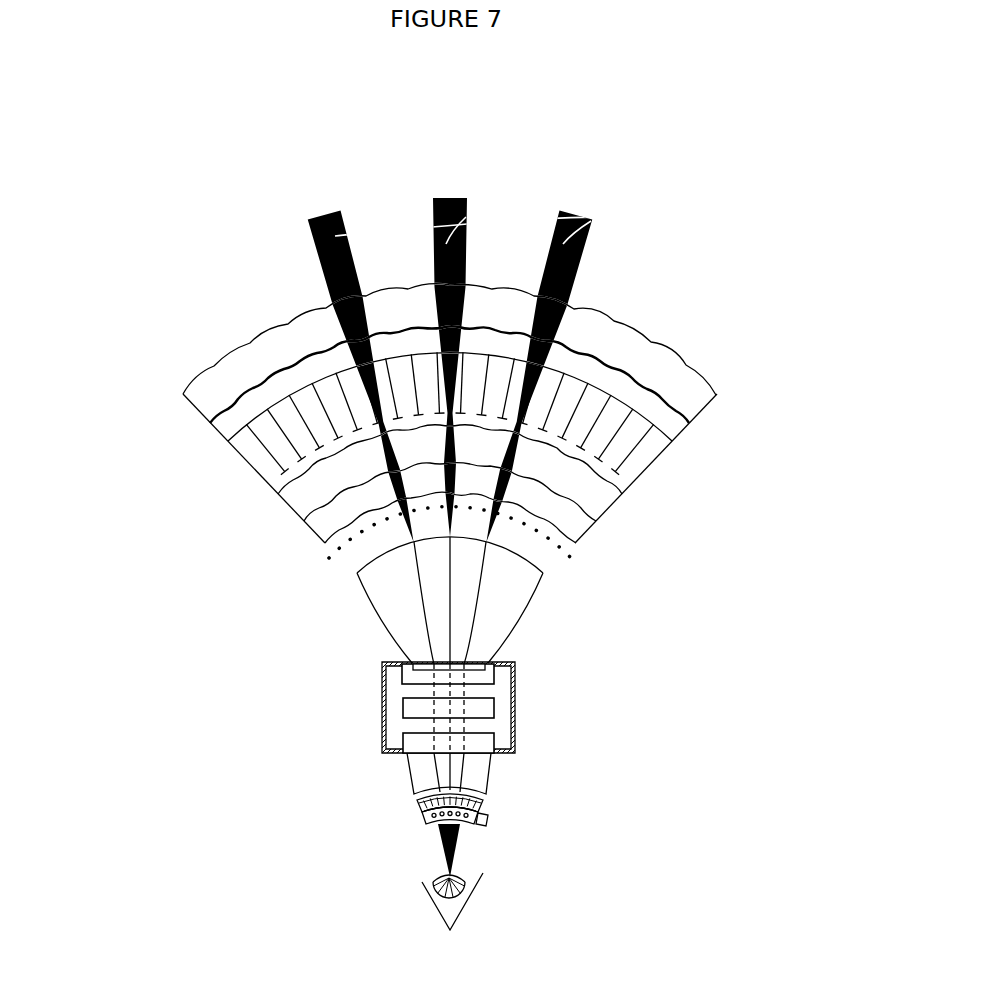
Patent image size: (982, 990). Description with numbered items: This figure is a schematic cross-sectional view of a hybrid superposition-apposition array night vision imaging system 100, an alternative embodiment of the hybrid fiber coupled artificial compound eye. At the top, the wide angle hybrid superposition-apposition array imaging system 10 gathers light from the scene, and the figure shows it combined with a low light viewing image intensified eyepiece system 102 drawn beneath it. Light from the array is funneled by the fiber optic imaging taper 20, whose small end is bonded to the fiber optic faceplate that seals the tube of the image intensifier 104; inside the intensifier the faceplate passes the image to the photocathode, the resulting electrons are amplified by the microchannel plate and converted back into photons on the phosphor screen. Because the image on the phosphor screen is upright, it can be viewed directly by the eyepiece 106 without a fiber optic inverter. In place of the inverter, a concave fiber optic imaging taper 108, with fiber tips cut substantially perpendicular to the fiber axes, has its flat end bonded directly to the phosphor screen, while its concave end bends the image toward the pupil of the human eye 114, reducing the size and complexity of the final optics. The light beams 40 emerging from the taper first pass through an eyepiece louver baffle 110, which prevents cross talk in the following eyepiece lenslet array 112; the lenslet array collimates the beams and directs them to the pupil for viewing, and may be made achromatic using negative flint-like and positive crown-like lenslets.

The wide angle hybrid superposition-apposition array imaging system 10 is at (182, 285).
The fiber optic imaging taper 20 is at (400, 606).
The light beams 40 is at (460, 857).
The hybrid superposition-apposition array night vision imaging system 100 is at (448, 571).
The low light viewing image intensified eyepiece system 102 is at (331, 759).
The image intensifier 104 is at (524, 706).
The eyepiece 106 is at (465, 794).
The concave fiber optic imaging taper 108 is at (477, 777).
The eyepiece louver baffle 110 is at (483, 808).
The eyepiece lenslet array 112 is at (512, 833).
The human eye 114 is at (447, 877).